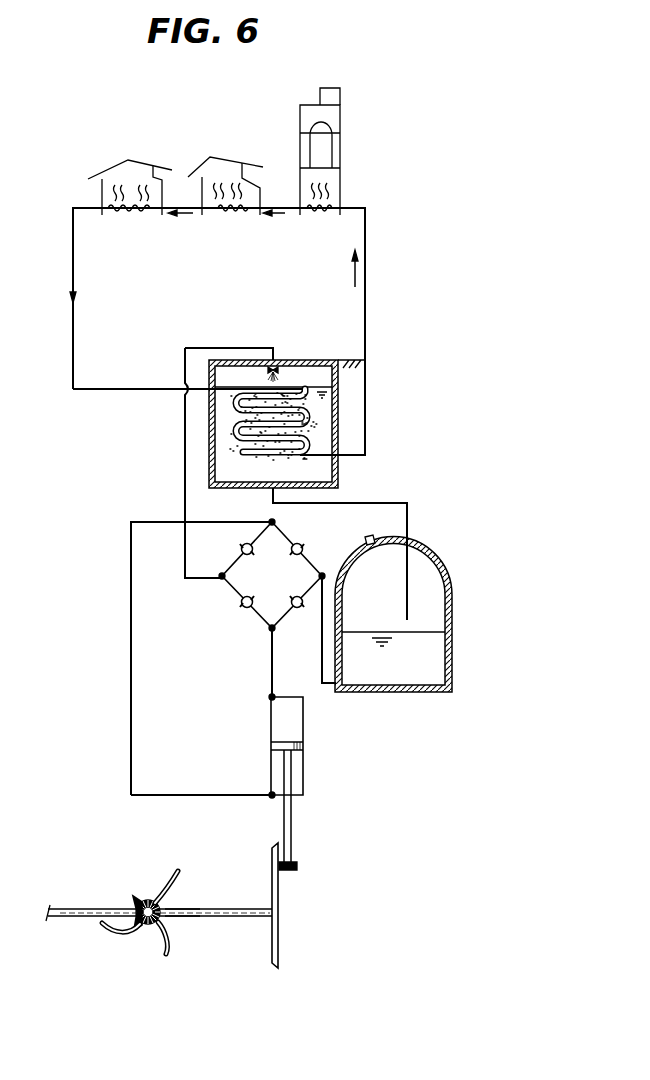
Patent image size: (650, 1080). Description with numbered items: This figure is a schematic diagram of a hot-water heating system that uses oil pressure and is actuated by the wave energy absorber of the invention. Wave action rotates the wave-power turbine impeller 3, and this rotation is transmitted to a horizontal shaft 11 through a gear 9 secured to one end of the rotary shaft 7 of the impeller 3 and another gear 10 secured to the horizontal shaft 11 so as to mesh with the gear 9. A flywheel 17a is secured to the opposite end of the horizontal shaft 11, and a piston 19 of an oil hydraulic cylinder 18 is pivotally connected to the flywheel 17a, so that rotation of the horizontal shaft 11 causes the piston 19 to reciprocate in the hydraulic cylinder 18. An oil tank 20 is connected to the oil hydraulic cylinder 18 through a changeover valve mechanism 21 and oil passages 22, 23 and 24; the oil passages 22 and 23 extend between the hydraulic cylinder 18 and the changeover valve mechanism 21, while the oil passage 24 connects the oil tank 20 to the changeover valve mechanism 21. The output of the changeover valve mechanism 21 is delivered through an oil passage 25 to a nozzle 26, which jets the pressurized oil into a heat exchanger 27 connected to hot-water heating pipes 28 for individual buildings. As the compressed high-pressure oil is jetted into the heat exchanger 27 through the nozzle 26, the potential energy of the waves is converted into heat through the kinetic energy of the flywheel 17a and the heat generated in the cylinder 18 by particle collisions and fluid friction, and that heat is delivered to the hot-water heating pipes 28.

The wave-power turbine impeller 3 is at (173, 872).
The rotary shaft 7 is at (176, 918).
The gear 9 is at (160, 906).
The gear 10 is at (145, 930).
The horizontal shaft 11 is at (226, 918).
The flywheel 17a is at (280, 946).
The oil hydraulic cylinder 18 is at (276, 730).
The piston 19 is at (294, 813).
The oil tank 20 is at (453, 661).
The changeover valve mechanism 21 is at (228, 657).
The oil passage 22 is at (271, 665).
The oil passage 23 is at (233, 795).
The oil passage 24 is at (322, 617).
The oil passage 25 is at (185, 482).
The nozzle 26 is at (276, 363).
The heat exchanger 27 is at (209, 424).
The hot-water heating pipes 28 is at (313, 211).